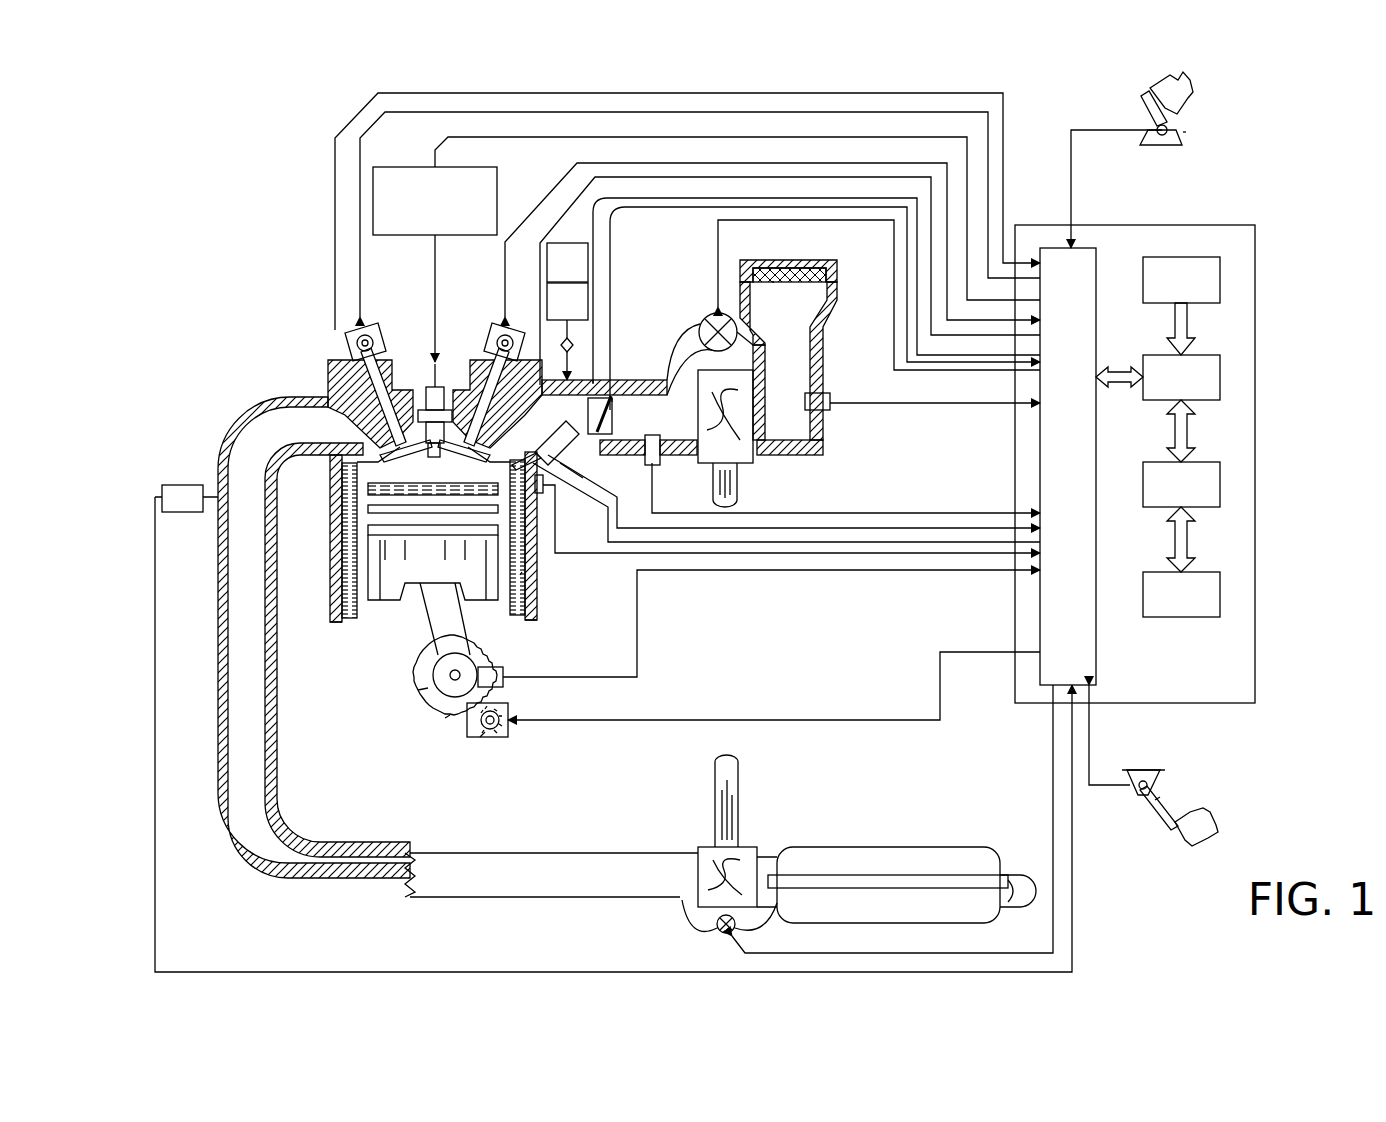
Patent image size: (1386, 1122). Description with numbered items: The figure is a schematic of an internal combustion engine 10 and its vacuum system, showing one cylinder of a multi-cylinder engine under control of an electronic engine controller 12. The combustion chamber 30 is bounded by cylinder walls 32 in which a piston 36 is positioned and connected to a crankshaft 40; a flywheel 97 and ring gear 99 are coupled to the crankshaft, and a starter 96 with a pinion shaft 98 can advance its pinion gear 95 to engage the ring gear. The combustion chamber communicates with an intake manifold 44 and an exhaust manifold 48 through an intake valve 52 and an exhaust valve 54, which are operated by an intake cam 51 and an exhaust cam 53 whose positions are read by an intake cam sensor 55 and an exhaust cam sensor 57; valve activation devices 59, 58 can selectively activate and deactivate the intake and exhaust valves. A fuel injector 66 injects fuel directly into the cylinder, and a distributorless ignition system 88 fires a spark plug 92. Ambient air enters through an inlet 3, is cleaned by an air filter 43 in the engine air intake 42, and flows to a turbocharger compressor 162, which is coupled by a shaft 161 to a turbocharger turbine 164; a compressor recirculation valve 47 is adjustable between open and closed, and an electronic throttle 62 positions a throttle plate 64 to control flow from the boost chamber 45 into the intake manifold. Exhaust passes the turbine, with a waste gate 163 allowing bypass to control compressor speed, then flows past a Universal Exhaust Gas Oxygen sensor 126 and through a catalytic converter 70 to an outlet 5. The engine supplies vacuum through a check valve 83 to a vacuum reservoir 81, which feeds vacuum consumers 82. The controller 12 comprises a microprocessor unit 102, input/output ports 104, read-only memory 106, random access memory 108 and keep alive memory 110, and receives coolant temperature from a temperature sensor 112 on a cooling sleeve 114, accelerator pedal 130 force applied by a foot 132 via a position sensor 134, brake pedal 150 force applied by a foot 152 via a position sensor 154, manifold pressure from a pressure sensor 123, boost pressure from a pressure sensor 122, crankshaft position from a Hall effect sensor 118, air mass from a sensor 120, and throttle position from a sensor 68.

The inlet 3 is at (806, 262).
The outlet 5 is at (1020, 864).
The internal combustion engine 10 is at (260, 306).
The electronic engine controller 12 is at (1253, 230).
The combustion chamber 30 is at (432, 467).
The cylinder walls 32 is at (372, 614).
The piston 36 is at (416, 572).
The crankshaft 40 is at (428, 708).
The engine air intake 42 is at (690, 270).
The air filter 43 is at (772, 282).
The intake manifold 44 is at (546, 421).
The boost chamber 45 is at (646, 427).
The compressor recirculation valve 47 is at (705, 322).
The exhaust manifold 48 is at (283, 433).
The intake cam 51 is at (500, 328).
The intake valve 52 is at (480, 437).
The exhaust cam 53 is at (368, 330).
The exhaust valve 54 is at (378, 452).
The intake cam sensor 55 is at (512, 333).
The exhaust cam sensor 57 is at (350, 343).
The valve activation device 58 is at (374, 347).
The valve activation device 59 is at (496, 348).
The electronic throttle 62 is at (606, 416).
The throttle plate 64 is at (601, 432).
The fuel injector 66 is at (543, 492).
The throttle position sensor 68 is at (612, 398).
The catalytic converter 70 is at (820, 847).
The vacuum reservoir 81 is at (567, 331).
The vacuum consumers 82 is at (567, 262).
The check valve 83 is at (595, 380).
The distributorless ignition system 88 is at (391, 167).
The spark plug 92 is at (441, 387).
The pinion gear 95 is at (494, 740).
The starter 96 is at (505, 737).
The flywheel 97 is at (420, 690).
The pinion shaft 98 is at (480, 737).
The ring gear 99 is at (445, 718).
The microprocessor unit 102 is at (1222, 380).
The input/output ports 104 is at (1097, 265).
The read-only memory 106 is at (1222, 276).
The random access memory 108 is at (1222, 487).
The keep alive memory 110 is at (1222, 597).
The temperature sensor 112 is at (556, 520).
The cooling sleeve 114 is at (522, 572).
The Hall effect sensor 118 is at (506, 667).
The air mass sensor 120 is at (830, 400).
The pressure sensor 122 is at (656, 465).
The pressure sensor 123 is at (578, 457).
The Universal Exhaust Gas Oxygen sensor 126 is at (162, 492).
The accelerator pedal 130 is at (1142, 103).
The foot 132 is at (1195, 93).
The position sensor 134 is at (1186, 132).
The brake pedal 150 is at (1170, 830).
The foot 152 is at (1205, 806).
The position sensor 154 is at (1130, 782).
The shaft 161 is at (738, 488).
The turbocharger compressor 162 is at (753, 422).
The waste gate 163 is at (718, 932).
The turbocharger turbine 164 is at (706, 847).